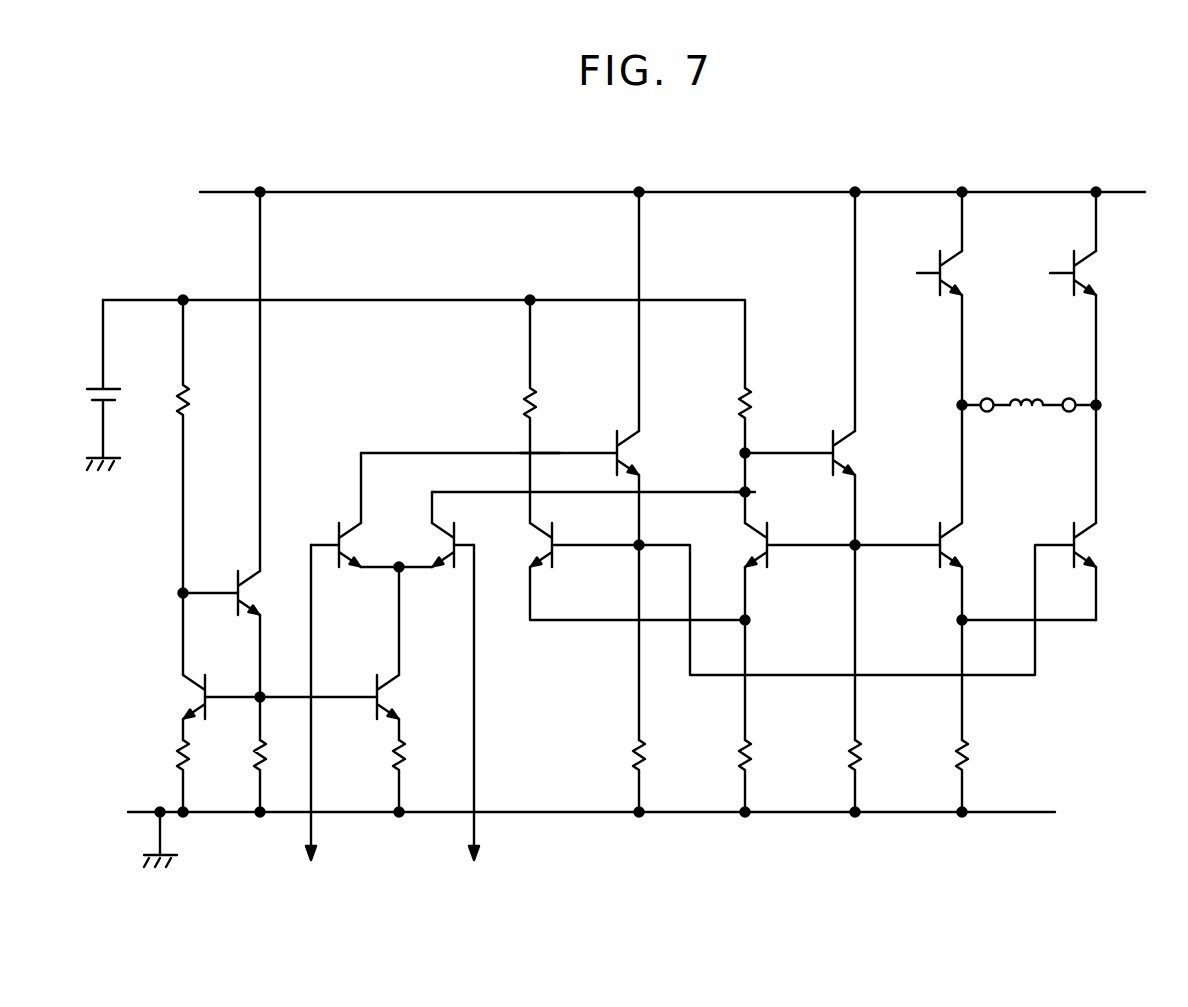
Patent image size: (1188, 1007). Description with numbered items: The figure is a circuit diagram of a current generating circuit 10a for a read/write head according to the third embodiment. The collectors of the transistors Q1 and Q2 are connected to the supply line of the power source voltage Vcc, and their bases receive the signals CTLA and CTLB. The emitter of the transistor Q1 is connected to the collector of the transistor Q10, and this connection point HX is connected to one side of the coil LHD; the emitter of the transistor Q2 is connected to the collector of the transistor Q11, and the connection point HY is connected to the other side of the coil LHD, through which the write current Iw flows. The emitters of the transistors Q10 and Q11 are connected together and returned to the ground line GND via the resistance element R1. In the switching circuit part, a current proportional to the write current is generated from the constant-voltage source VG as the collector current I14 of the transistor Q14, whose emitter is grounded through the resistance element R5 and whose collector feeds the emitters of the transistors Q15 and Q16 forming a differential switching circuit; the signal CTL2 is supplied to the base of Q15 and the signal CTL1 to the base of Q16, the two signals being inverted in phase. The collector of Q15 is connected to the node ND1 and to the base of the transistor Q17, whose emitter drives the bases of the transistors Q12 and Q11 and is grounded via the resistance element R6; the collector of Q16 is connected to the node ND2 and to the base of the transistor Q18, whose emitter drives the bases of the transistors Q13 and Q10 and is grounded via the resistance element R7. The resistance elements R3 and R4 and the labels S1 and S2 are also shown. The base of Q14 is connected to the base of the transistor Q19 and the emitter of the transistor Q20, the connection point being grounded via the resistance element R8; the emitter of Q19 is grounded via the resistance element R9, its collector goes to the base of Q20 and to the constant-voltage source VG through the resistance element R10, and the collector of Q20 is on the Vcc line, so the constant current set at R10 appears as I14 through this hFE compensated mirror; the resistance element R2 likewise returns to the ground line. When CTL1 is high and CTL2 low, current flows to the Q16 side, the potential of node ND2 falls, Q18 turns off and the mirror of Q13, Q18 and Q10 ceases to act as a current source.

The drive circuit 10a is at (747, 170).
The power source voltage supply line Vcc is at (646, 193).
The ground line GND is at (618, 834).
The constant-voltage source VG is at (120, 389).
The resistance element R1 is at (968, 757).
The resistor R2 is at (753, 757).
The resistor R3 is at (520, 404).
The resistor R4 is at (752, 400).
The resistance element R5 is at (406, 754).
The resistance element R6 is at (645, 757).
The resistance element R7 is at (861, 757).
The resistance element R8 is at (251, 758).
The resistance element R9 is at (175, 757).
The resistance element R10 is at (190, 393).
The transistor Q1 is at (952, 254).
The transistor Q2 is at (1085, 254).
The transistor Q10 is at (960, 541).
The transistor Q11 is at (1091, 546).
The transistor Q12 is at (534, 549).
The transistor Q13 is at (748, 545).
The transistor Q14 is at (386, 693).
The transistor Q15 is at (345, 572).
The transistor Q16 is at (447, 572).
The transistor Q17 is at (628, 453).
The transistor Q18 is at (844, 455).
The transistor Q19 is at (188, 697).
The transistor Q20 is at (242, 595).
The switch S1 is at (440, 522).
The switch S2 is at (330, 521).
The node ND1 is at (533, 452).
The node ND2 is at (751, 493).
The coil LHD is at (1020, 392).
The connection point HX is at (943, 406).
The connection point HY is at (1114, 406).
The control signal A CTLA is at (899, 274).
The control signal B CTLB is at (1031, 274).
The signal CTL1 is at (472, 718).
The signal CTL2 is at (309, 718).
The collector current I14 is at (405, 628).
The write current Iw is at (1053, 420).